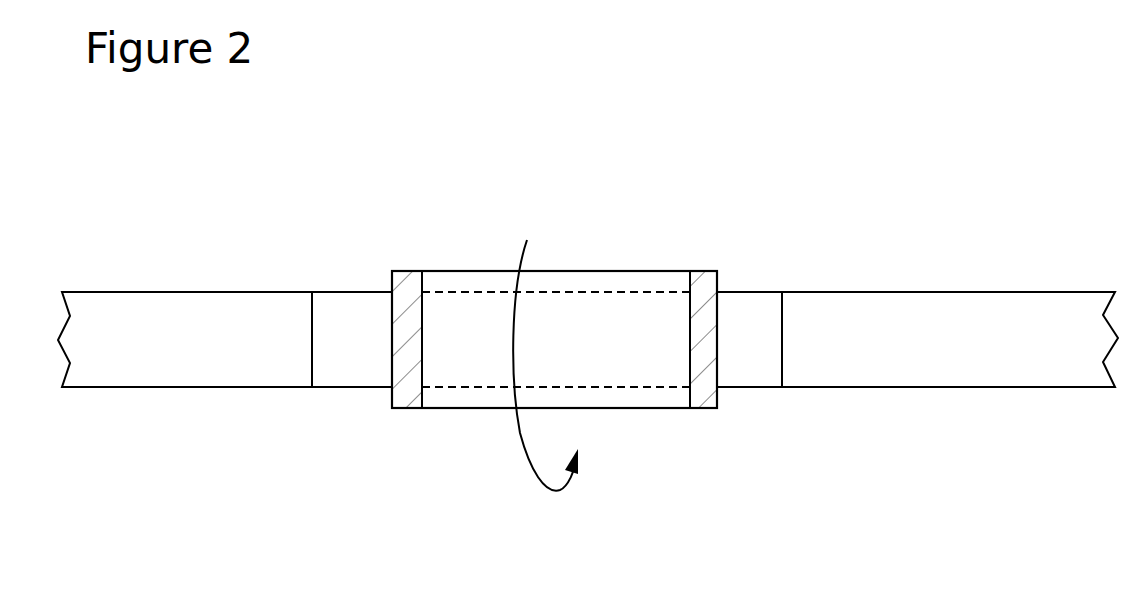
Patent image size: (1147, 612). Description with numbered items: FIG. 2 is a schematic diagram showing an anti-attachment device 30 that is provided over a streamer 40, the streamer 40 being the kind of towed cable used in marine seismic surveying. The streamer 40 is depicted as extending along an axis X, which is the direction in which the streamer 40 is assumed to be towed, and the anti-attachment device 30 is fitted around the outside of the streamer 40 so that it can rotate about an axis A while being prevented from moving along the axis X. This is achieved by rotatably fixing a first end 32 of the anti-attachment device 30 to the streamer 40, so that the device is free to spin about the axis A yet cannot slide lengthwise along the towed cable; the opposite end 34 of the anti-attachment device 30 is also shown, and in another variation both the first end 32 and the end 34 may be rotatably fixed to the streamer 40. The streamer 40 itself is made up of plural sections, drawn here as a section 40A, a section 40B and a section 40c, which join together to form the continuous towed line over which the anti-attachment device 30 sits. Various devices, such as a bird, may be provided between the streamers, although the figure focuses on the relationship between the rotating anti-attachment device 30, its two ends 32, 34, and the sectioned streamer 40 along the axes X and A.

The anti-attachment device 30 is at (563, 345).
The first end 32 is at (403, 408).
The end 34 is at (700, 408).
The streamer 40 is at (588, 295).
The section 40A is at (231, 317).
The section 40B is at (354, 315).
The section 40c is at (849, 292).
The axis X is at (272, 191).
The axis A is at (530, 470).